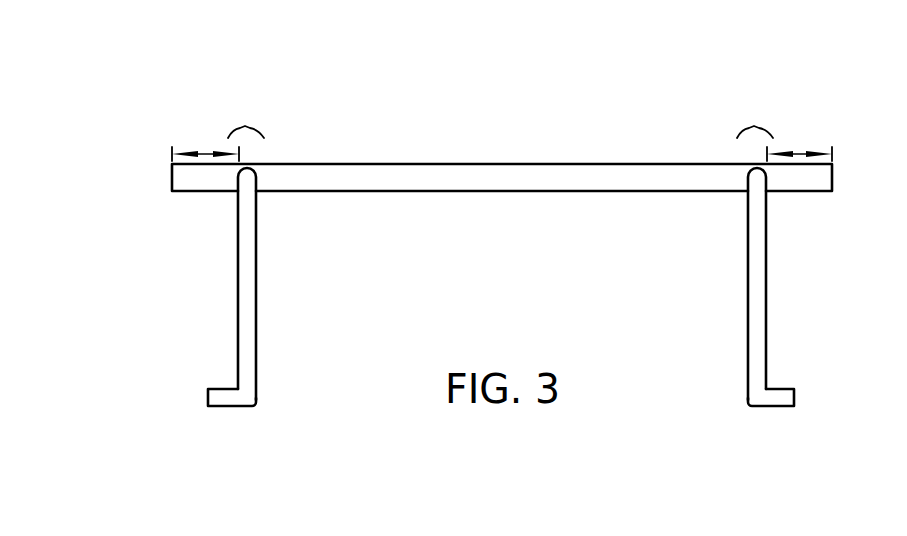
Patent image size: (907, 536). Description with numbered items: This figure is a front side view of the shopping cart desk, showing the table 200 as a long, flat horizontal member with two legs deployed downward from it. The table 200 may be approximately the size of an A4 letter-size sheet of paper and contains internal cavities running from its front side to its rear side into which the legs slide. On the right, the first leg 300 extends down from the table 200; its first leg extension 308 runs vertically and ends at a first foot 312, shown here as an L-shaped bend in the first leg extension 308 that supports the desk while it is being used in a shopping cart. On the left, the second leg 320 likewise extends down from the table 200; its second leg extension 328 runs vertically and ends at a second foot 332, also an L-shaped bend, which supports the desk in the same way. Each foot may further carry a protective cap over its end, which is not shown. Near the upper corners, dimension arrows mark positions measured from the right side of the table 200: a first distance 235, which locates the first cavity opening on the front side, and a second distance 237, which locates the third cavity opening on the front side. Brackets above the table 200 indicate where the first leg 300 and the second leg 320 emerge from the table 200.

The table 200 is at (597, 163).
The second distance 237 is at (206, 152).
The first distance 235 is at (798, 152).
The second leg 320 is at (248, 112).
The first leg 300 is at (756, 112).
The second leg extension 328 is at (239, 291).
The second foot 332 is at (209, 397).
The first leg extension 308 is at (764, 305).
The first foot 312 is at (794, 394).